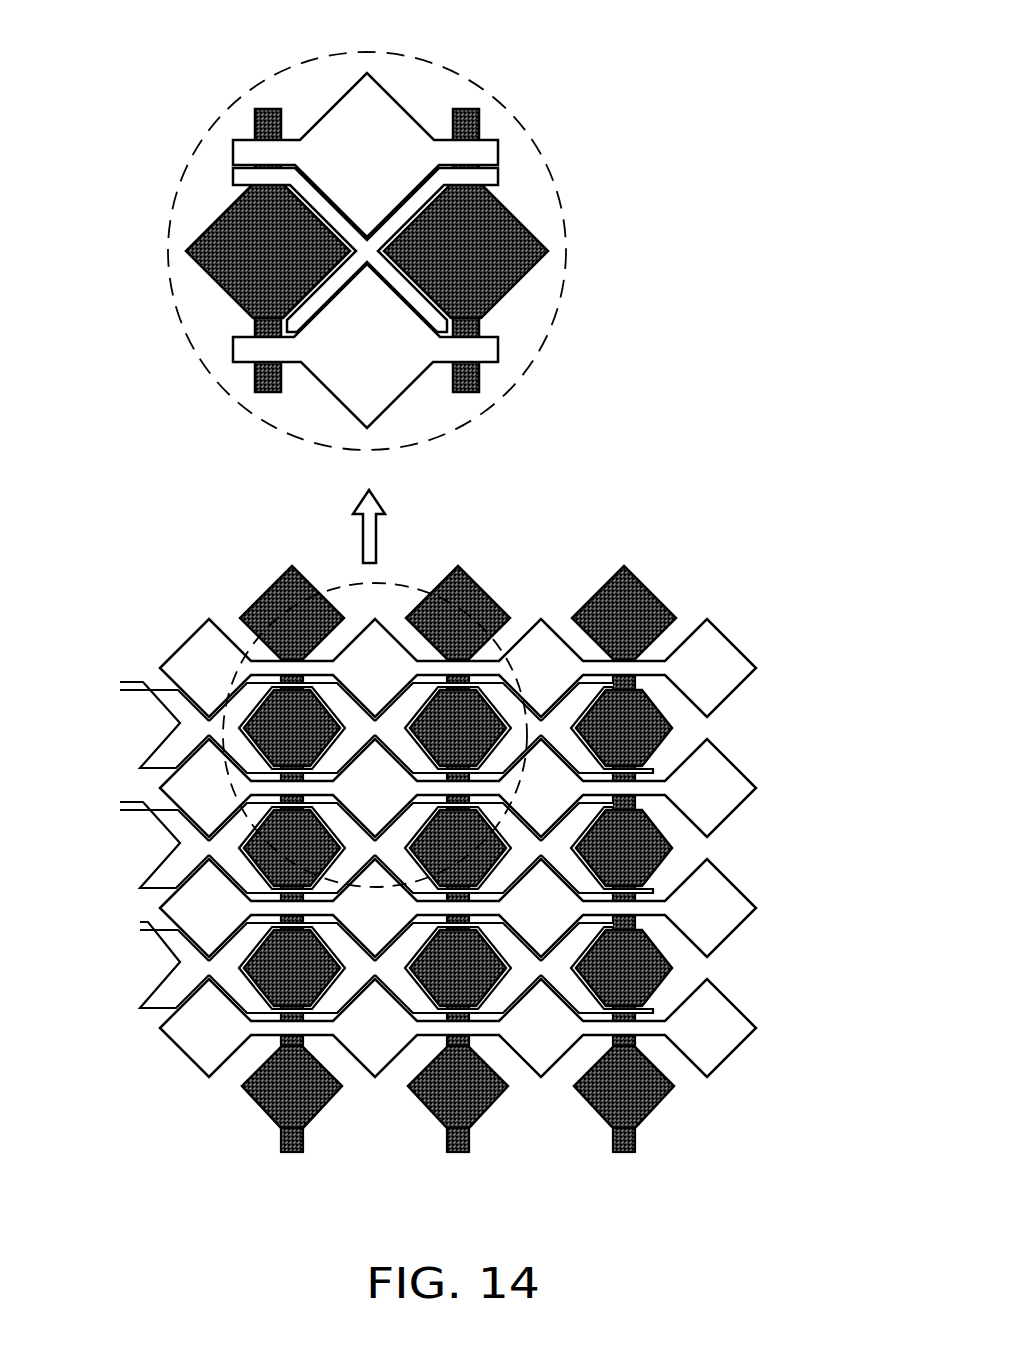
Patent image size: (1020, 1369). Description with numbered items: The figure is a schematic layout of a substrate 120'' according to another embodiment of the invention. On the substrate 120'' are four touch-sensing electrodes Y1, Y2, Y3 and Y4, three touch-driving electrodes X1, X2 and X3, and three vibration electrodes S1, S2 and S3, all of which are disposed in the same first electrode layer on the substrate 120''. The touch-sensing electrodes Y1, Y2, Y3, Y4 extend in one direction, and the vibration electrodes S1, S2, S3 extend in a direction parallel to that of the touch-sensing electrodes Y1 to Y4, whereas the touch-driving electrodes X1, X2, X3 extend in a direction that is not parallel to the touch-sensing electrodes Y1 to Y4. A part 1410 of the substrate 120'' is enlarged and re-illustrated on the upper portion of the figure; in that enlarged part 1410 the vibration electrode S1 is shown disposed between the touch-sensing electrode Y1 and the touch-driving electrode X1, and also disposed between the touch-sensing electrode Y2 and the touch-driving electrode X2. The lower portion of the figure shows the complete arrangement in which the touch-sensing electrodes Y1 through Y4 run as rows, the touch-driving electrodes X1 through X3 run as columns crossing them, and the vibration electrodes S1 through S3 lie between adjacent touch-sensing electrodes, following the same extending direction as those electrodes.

The touch-driving electrode X1 is at (270, 112).
The touch-driving electrode X2 is at (467, 112).
The touch-driving electrode X3 is at (612, 600).
The touch-sensing electrode Y1 is at (248, 152).
The touch-sensing electrode Y2 is at (248, 350).
The touch-sensing electrode Y3 is at (190, 895).
The touch-sensing electrode Y4 is at (185, 1040).
The vibration electrode S1 is at (437, 323).
The vibration electrode S2 is at (120, 804).
The vibration electrode S3 is at (165, 993).
The part of the substrate 1410 is at (560, 196).
The substrate 120'' is at (757, 1205).